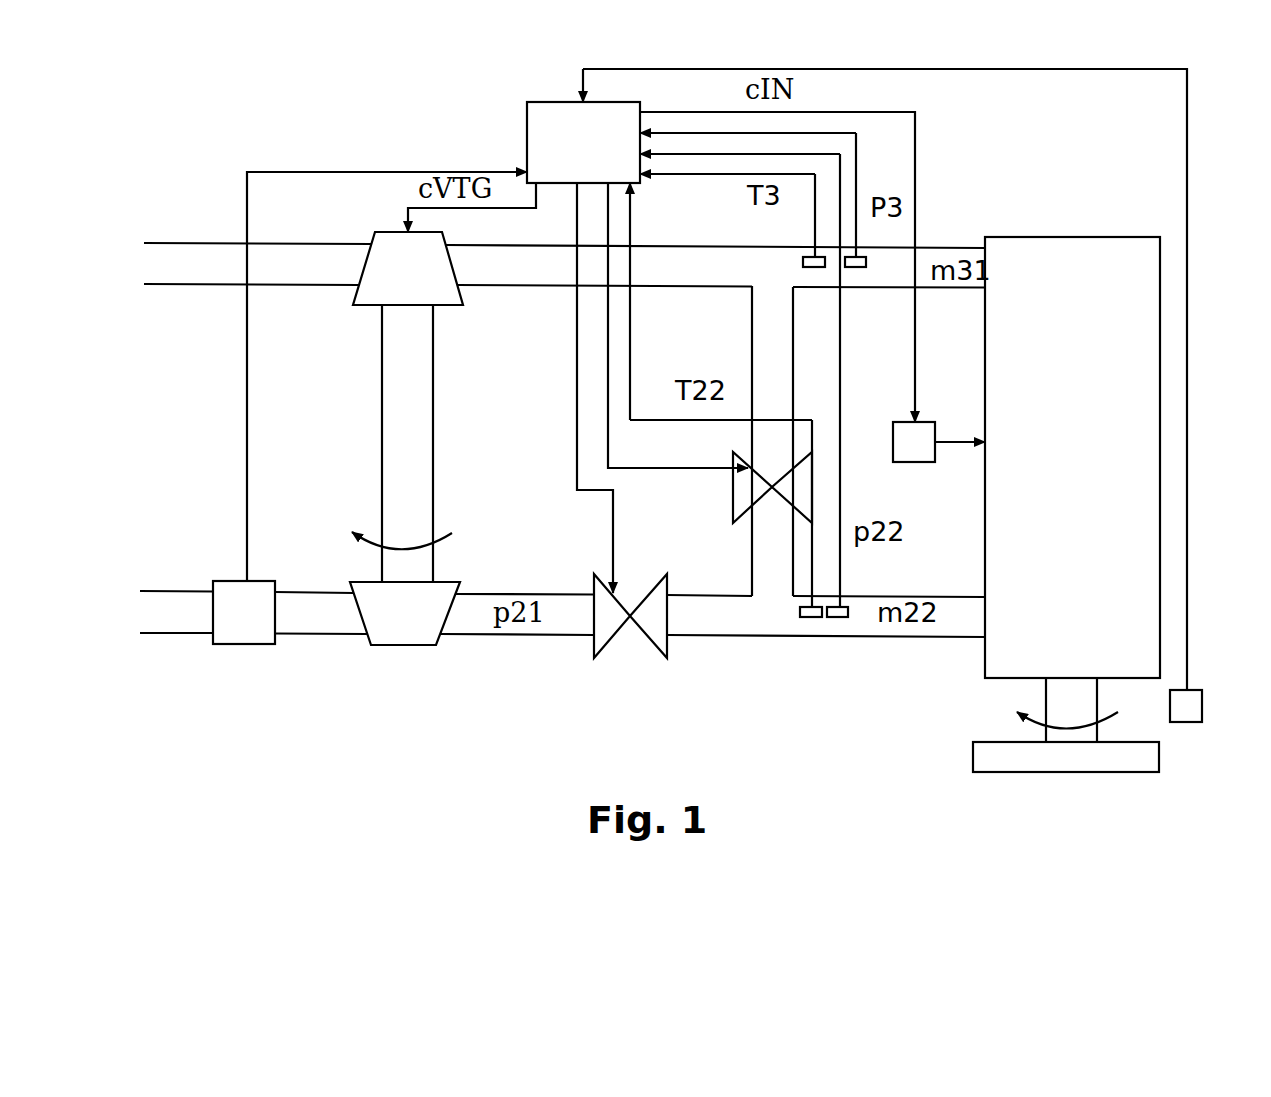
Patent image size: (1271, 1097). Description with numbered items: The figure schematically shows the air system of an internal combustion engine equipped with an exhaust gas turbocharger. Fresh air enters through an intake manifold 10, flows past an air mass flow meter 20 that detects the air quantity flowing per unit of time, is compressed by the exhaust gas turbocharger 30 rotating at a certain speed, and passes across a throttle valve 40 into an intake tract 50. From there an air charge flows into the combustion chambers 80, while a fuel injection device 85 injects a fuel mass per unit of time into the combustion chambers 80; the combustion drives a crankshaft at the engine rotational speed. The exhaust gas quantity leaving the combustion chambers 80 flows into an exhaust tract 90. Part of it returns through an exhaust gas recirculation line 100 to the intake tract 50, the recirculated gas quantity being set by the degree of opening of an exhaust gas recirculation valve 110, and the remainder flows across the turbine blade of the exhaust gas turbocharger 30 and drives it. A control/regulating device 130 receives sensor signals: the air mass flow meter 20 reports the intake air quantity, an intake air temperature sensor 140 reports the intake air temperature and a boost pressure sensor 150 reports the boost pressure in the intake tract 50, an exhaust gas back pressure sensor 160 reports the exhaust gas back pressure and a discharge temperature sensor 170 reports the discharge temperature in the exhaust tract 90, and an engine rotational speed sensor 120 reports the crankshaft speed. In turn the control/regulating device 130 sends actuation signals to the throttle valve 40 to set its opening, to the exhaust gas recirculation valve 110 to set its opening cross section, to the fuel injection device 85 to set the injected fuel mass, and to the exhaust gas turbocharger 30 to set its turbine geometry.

The intake manifold 10 is at (490, 628).
The air mass flow meter 20 is at (233, 632).
The exhaust gas turbocharger 30 is at (398, 632).
The throttle valve 40 is at (600, 655).
The intake tract 50 is at (717, 625).
The combustion chambers 80 is at (1066, 504).
The fuel injection device 85 is at (917, 458).
The exhaust tract 90 is at (940, 250).
The exhaust gas recirculation line 100 is at (752, 318).
The exhaust gas recirculation valve 110 is at (742, 510).
The engine rotational speed sensor 120 is at (1183, 700).
The control/regulating device 130 is at (583, 142).
The intake air temperature sensor 140 is at (808, 620).
The boost pressure sensor 150 is at (835, 620).
The exhaust gas back pressure sensor 160 is at (812, 268).
The discharge temperature sensor 170 is at (843, 270).